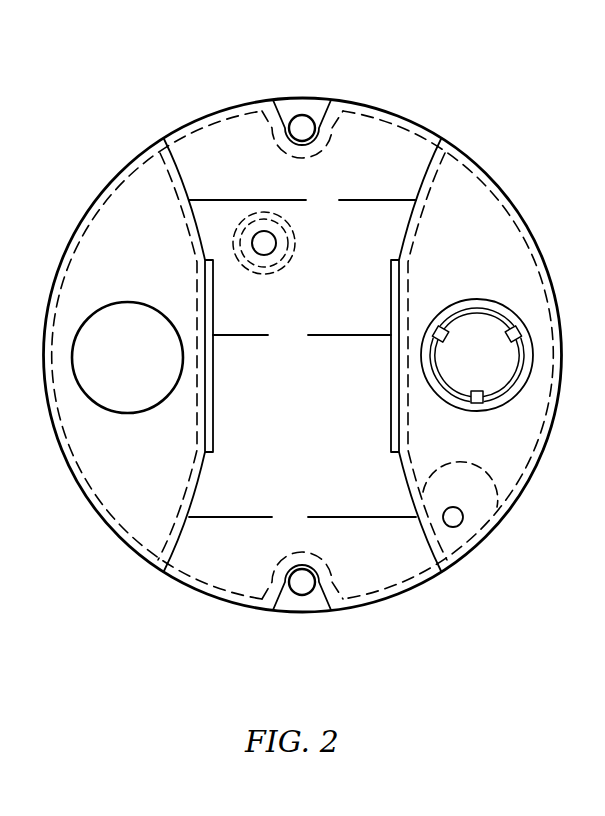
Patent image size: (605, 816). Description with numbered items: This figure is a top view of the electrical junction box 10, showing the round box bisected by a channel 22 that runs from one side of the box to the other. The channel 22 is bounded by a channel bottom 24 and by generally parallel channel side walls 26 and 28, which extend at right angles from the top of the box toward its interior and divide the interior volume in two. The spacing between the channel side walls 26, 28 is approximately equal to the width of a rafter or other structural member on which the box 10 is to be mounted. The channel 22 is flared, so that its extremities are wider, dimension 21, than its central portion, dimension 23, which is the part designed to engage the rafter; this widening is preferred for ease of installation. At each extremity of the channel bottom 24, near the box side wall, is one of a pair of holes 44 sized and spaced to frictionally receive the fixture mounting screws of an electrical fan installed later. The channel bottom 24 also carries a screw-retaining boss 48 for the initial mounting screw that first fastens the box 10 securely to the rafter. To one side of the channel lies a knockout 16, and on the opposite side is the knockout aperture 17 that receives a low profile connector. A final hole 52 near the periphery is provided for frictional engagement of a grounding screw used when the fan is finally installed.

The electrical junction box 10 is at (484, 80).
The knockout 16 is at (488, 327).
The knockout aperture 17 is at (105, 392).
The dimension of channel extremities 21 is at (302, 358).
The channel 22 is at (363, 553).
The dimension of central channel portion 23 is at (302, 335).
The channel bottom 24 is at (305, 390).
The channel side wall 26 is at (213, 425).
The channel side wall 28 is at (391, 431).
The holes 44 is at (302, 115).
The screw-retaining boss 48 is at (272, 252).
The hole 52 is at (458, 526).